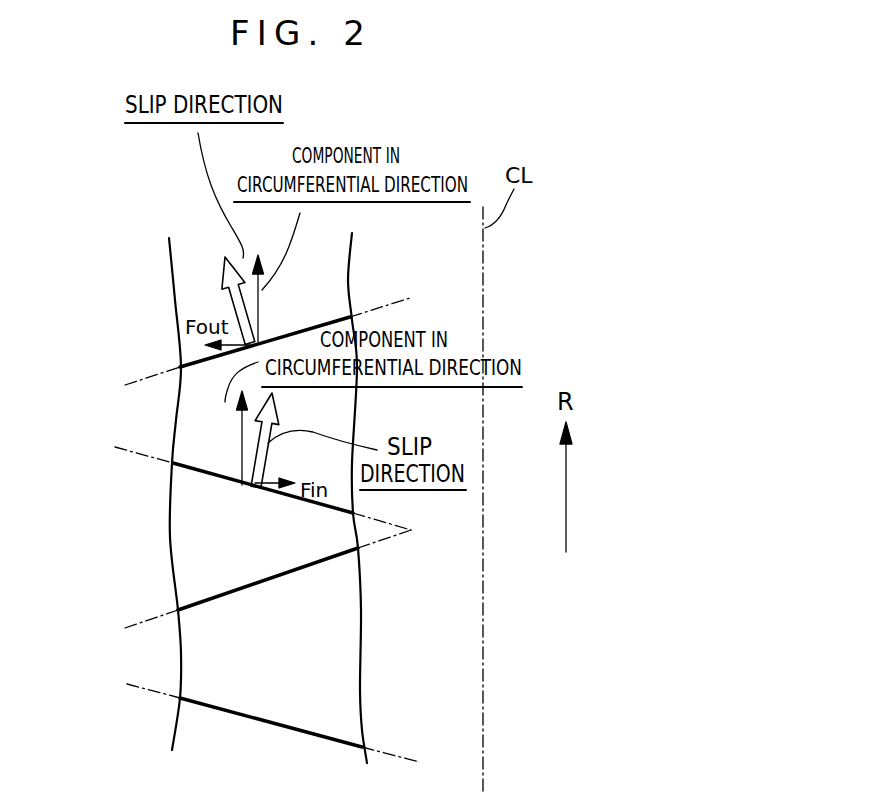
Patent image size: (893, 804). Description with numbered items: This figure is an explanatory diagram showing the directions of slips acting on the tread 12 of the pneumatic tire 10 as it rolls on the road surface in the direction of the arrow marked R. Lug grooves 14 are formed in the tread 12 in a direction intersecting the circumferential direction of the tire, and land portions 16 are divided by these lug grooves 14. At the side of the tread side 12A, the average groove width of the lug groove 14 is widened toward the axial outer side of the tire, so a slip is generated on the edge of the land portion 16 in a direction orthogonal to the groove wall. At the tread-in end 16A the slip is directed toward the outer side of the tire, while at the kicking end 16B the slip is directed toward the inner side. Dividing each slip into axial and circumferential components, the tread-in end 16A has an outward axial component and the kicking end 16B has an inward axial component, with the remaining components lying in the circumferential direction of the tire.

The pneumatic tire 10 is at (145, 230).
The tread 12 is at (157, 407).
The tread side 12A is at (197, 433).
The lug groove 14 is at (181, 265).
The land portion 16 is at (265, 612).
The tread-in end 16A is at (303, 318).
The kicking end 16B is at (318, 506).